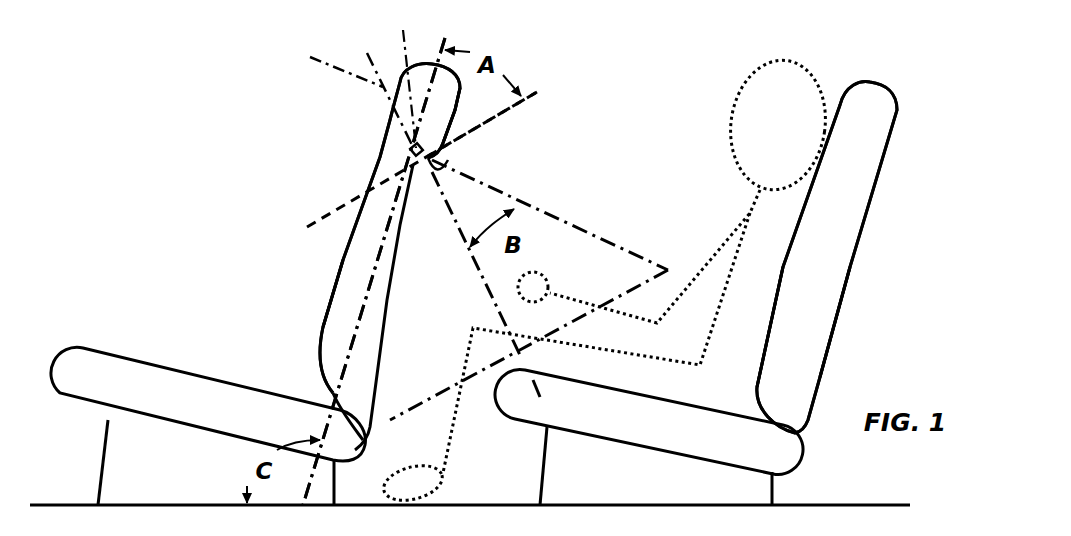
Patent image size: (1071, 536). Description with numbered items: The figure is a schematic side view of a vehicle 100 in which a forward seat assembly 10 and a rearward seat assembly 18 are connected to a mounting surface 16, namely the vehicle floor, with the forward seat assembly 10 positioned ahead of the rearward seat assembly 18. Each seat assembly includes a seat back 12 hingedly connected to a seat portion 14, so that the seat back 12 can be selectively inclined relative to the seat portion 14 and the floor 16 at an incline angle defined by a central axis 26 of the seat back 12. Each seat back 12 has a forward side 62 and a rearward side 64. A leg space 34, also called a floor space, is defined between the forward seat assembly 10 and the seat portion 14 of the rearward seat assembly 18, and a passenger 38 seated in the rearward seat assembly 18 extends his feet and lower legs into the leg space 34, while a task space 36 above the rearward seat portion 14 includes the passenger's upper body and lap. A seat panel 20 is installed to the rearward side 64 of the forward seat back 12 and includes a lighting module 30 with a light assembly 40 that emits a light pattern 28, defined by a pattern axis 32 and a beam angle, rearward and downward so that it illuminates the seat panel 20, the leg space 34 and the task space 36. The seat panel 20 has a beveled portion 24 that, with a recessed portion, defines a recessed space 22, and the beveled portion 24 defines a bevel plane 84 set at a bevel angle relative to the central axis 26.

The vehicle 100 is at (148, 155).
The forward seat assembly 10 is at (280, 163).
The seat back 12 is at (325, 327).
The seat portion 14 is at (157, 362).
The mounting surface, floor 16 is at (88, 503).
The rearward seat assembly 18 is at (885, 213).
The seat panel 20 is at (375, 278).
The recessed space 22 is at (389, 290).
The beveled portion 24 is at (432, 168).
The central axis of seat back 26 is at (403, 77).
The light pattern 28 is at (583, 230).
The lighting module 30 is at (395, 162).
The pattern axis 32 is at (347, 88).
The leg space, floor space 34 is at (529, 296).
The task space, seat space 36 is at (546, 280).
The passenger 38 is at (720, 97).
The light assembly 40 is at (410, 152).
The forward side of seat back 62 is at (330, 300).
The rearward side of seat back 64 is at (455, 123).
The bevel plane 84 is at (537, 106).